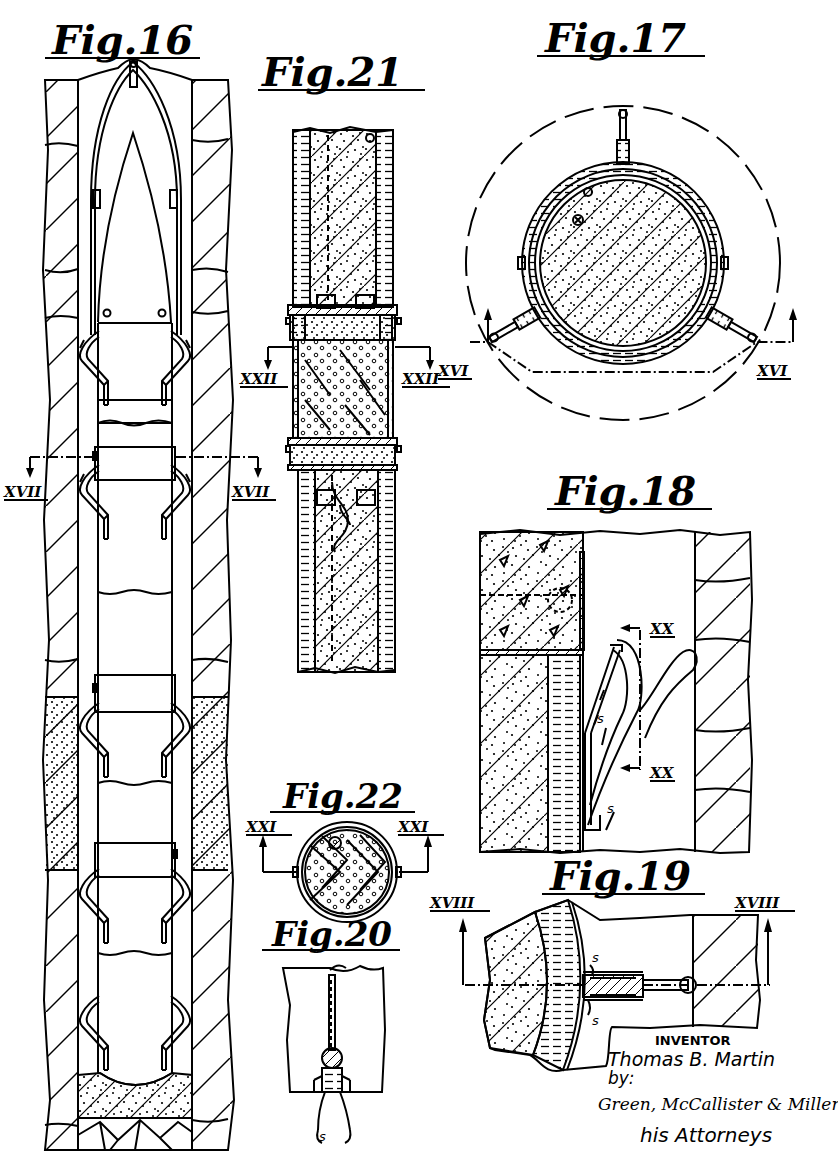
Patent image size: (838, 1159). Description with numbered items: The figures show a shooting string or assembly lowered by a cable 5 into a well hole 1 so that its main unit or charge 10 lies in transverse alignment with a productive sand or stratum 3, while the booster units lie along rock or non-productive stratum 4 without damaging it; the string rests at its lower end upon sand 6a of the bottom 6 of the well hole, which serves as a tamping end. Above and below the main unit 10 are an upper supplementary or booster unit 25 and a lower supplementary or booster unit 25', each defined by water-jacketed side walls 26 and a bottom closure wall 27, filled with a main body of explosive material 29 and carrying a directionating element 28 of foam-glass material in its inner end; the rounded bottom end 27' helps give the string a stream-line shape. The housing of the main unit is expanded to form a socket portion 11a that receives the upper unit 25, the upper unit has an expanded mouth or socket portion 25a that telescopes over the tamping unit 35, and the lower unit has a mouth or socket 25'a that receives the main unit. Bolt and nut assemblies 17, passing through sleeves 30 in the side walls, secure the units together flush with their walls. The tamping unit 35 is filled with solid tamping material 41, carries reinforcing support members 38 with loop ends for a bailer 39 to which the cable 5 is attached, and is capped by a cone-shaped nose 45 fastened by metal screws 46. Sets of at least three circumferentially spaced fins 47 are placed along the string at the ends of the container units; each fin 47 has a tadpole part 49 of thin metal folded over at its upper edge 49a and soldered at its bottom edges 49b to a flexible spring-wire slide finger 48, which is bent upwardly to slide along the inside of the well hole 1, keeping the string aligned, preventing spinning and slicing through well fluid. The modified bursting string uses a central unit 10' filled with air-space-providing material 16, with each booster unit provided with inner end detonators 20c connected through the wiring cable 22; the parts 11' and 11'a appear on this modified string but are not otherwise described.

In FIG. 16, the well hole 1 is at (190, 200).
In FIG. 17, the well hole 1 is at (737, 148).
In FIG. 18, the well hole 1 is at (694, 554).
In FIG. 19, the well hole 1 is at (692, 929).
In FIG. 16, the productive sand or stratum 3 is at (62, 796).
In FIG. 16, the rock or non-productive stratum 4 is at (52, 567).
In FIG. 16, the cable 5 is at (128, 75).
In FIG. 16, the bottom of the well hole 6 is at (95, 1128).
In FIG. 16, the sand of the well bottom 6a is at (106, 1096).
In FIG. 16, the main or central unit 10 is at (181, 856).
In FIG. 22, the main or central unit 10 is at (347, 863).
In FIG. 21, the central unit of modified assembly 10' is at (366, 389).
In FIG. 16, the socket portion of housing 11a is at (176, 684).
In FIG. 21, the flange plate 11' is at (379, 432).
In FIG. 21, the bolt 11'a is at (370, 269).
In FIG. 21, the air-space-providing refractory layer 16 is at (398, 417).
In FIG. 22, the air-space-providing refractory layer 16 is at (325, 862).
In FIG. 16, the bolt and nut assemblies 17 is at (97, 454).
In FIG. 21, the bolt and nut assemblies 17 is at (398, 312).
In FIG. 17, the bolt and nut assemblies 17 is at (728, 259).
In FIG. 18, the bolt and nut assemblies 17 is at (496, 585).
In FIG. 22, the bolt and nut assemblies 17 is at (296, 877).
In FIG. 21, the inner end detonators 20c is at (365, 300).
In FIG. 21, the wiring cable 22 is at (322, 241).
In FIG. 17, the wiring cable 22 is at (570, 221).
In FIG. 22, the wiring cable 22 is at (333, 839).
In FIG. 16, the upper supplementary or booster unit 25 is at (183, 698).
In FIG. 21, the upper supplementary or booster unit 25 is at (365, 217).
In FIG. 17, the upper supplementary or booster unit 25 is at (621, 257).
In FIG. 18, the upper supplementary or booster unit 25 is at (512, 702).
In FIG. 19, the upper supplementary or booster unit 25 is at (552, 1004).
In FIG. 20, the upper supplementary or booster unit 25 is at (354, 1029).
In FIG. 16, the lower supplementary or booster unit 25' is at (94, 1008).
In FIG. 21, the lower supplementary or booster unit 25' is at (369, 571).
In FIG. 16, the expanded mouth or socket portion 25a is at (182, 449).
In FIG. 21, the mouth or socket of lower unit 25'a is at (372, 468).
In FIG. 22, the mouth or socket of lower unit 25'a is at (322, 875).
In FIG. 21, the water-jacketed side walls 26 is at (370, 136).
In FIG. 17, the water-jacketed side walls 26 is at (588, 191).
In FIG. 18, the water-jacketed side walls 26 is at (550, 698).
In FIG. 19, the water-jacketed side walls 26 is at (540, 1043).
In FIG. 21, the bottom closure wall 27 is at (360, 327).
In FIG. 16, the rounded bottom end 27' is at (136, 1069).
In FIG. 21, the directionating element 28 is at (340, 327).
In FIG. 21, the explosive material 29 is at (345, 140).
In FIG. 17, the explosive material 29 is at (655, 223).
In FIG. 18, the explosive material 29 is at (500, 736).
In FIG. 19, the explosive material 29 is at (515, 1003).
In FIG. 21, the sleeves 30 is at (300, 306).
In FIG. 16, the tamping unit 35 is at (165, 416).
In FIG. 18, the tamping unit 35 is at (585, 549).
In FIG. 16, the reinforcing support members 38 is at (180, 229).
In FIG. 16, the bailer 39 is at (168, 122).
In FIG. 18, the tamping material 41 is at (512, 540).
In FIG. 16, the cone-shaped nose 45 is at (133, 147).
In FIG. 16, the metal screws 46 is at (162, 311).
In FIG. 16, the fins 47 is at (168, 370).
In FIG. 17, the fins 47 is at (631, 149).
In FIG. 18, the fins 47 is at (632, 695).
In FIG. 19, the fins 47 is at (612, 999).
In FIG. 20, the fins 47 is at (328, 989).
In FIG. 16, the slide finger 48 is at (84, 377).
In FIG. 17, the slide finger 48 is at (628, 122).
In FIG. 18, the slide finger 48 is at (671, 696).
In FIG. 19, the slide finger 48 is at (672, 996).
In FIG. 20, the slide finger 48 is at (345, 1069).
In FIG. 18, the tadpole part 49 is at (604, 631).
In FIG. 19, the tadpole part 49 is at (627, 981).
In FIG. 20, the tadpole part 49 is at (337, 1007).
In FIG. 18, the upper edge of tadpole part 49a is at (591, 681).
In FIG. 19, the upper edge of tadpole part 49a is at (610, 979).
In FIG. 20, the upper edge of tadpole part 49a is at (383, 981).
In FIG. 18, the bottom edges of tadpole part 49b is at (604, 786).